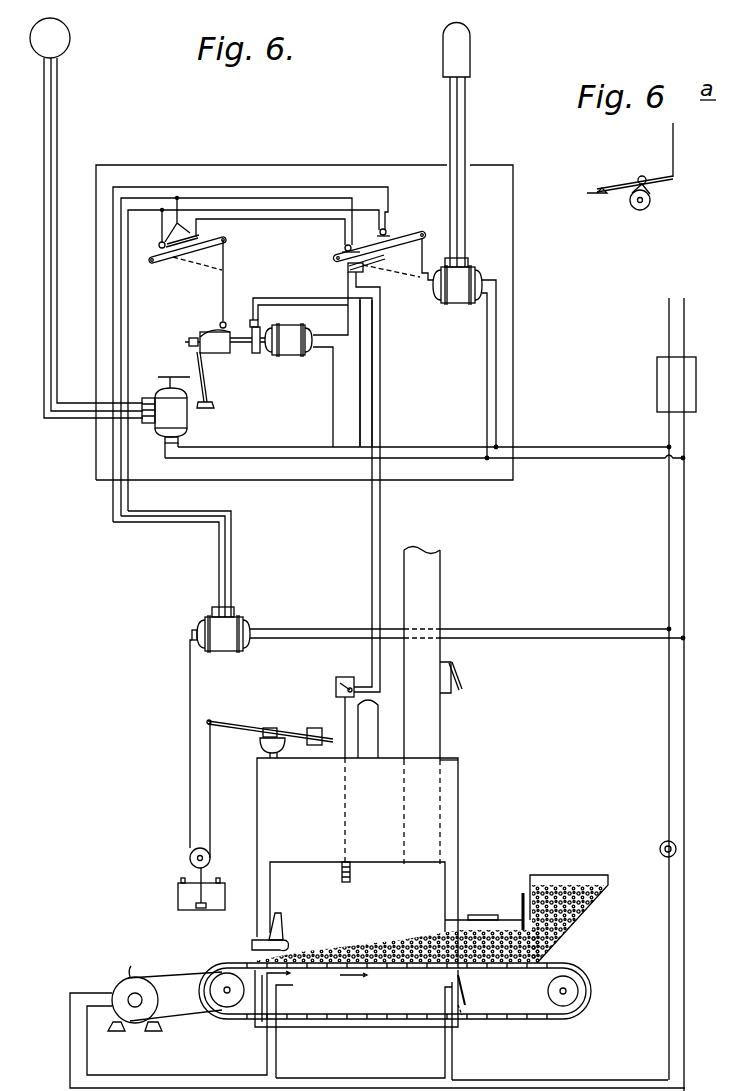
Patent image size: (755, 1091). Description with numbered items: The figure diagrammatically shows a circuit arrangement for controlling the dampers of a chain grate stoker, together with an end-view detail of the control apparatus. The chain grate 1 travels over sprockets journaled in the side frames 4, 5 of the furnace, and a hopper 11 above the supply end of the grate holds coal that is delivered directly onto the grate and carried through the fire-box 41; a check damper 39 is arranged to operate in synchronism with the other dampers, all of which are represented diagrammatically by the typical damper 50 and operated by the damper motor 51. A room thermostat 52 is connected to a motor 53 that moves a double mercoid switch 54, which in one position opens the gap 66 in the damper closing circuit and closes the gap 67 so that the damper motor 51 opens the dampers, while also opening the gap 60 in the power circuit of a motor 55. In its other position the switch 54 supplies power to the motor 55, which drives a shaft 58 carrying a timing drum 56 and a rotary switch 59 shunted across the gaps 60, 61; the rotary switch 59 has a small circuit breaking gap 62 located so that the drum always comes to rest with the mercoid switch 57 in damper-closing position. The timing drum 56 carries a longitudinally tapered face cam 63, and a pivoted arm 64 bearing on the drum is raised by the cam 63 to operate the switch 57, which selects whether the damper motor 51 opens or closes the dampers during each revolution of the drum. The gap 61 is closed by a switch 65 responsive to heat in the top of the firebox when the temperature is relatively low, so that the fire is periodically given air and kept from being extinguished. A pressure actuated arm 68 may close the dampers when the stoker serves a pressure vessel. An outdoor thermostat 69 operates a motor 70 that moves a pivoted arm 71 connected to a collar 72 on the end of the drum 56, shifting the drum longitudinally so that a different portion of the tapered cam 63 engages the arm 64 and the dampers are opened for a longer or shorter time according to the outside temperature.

In FIG. 6, the chain grate 1 is at (395, 995).
In FIG. 6, the side frame 4 is at (165, 1001).
In FIG. 6, the side frame 5 is at (126, 962).
In FIG. 6, the hopper 11 is at (586, 874).
In FIG. 6, the check damper 39 is at (461, 675).
In FIG. 6, the fire-box 41 is at (387, 758).
In FIG. 6, the damper 50 is at (178, 900).
In FIG. 6, the damper motor 51 is at (247, 618).
In FIG. 6, the room thermostat 52 is at (472, 40).
In FIG. 6, the motor 53 is at (458, 304).
In FIG. 6, the double mercoid switch 54 is at (374, 253).
In FIG. 6, the motor 55 is at (293, 356).
In FIG. 6, the timing drum 56 is at (210, 353).
In FIG. 6, the mercoid switch 57 is at (168, 258).
In FIG. 6, the shaft 58 is at (246, 347).
In FIG. 6, the rotary switch 59 is at (252, 319).
In FIG. 6, the gap 60 is at (347, 270).
In FIG. 6, the gap 61 is at (374, 312).
In FIG. 6, the circuit breaking gap 62 is at (252, 331).
In FIG. 6, the face cam 63 is at (203, 327).
In FIG. 6A, the face cam 63 is at (652, 200).
In FIG. 6A, the pivoted arm 64 is at (610, 183).
In FIG. 6, the switch 65 is at (337, 679).
In FIG. 6, the gap 66 is at (342, 245).
In FIG. 6, the gap 67 is at (387, 229).
In FIG. 6, the pressure actuated arm 68 is at (278, 728).
In FIG. 6, the outdoor thermostat 69 is at (70, 38).
In FIG. 6, the motor 70 is at (188, 422).
In FIG. 6, the pivoted arm 71 is at (208, 390).
In FIG. 6, the collar 72 is at (186, 340).